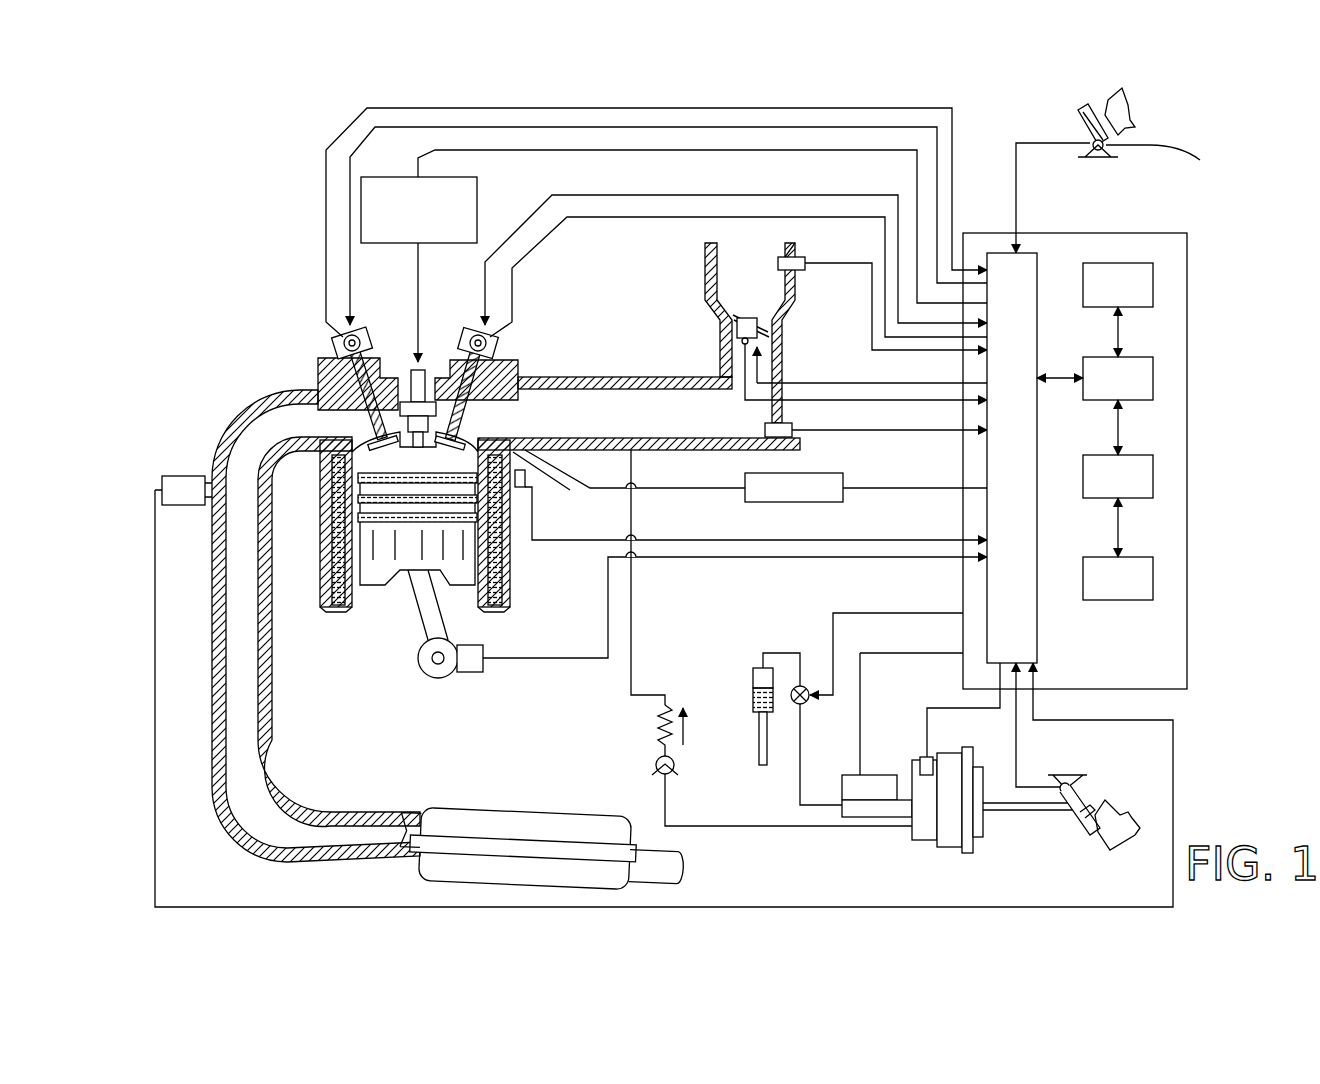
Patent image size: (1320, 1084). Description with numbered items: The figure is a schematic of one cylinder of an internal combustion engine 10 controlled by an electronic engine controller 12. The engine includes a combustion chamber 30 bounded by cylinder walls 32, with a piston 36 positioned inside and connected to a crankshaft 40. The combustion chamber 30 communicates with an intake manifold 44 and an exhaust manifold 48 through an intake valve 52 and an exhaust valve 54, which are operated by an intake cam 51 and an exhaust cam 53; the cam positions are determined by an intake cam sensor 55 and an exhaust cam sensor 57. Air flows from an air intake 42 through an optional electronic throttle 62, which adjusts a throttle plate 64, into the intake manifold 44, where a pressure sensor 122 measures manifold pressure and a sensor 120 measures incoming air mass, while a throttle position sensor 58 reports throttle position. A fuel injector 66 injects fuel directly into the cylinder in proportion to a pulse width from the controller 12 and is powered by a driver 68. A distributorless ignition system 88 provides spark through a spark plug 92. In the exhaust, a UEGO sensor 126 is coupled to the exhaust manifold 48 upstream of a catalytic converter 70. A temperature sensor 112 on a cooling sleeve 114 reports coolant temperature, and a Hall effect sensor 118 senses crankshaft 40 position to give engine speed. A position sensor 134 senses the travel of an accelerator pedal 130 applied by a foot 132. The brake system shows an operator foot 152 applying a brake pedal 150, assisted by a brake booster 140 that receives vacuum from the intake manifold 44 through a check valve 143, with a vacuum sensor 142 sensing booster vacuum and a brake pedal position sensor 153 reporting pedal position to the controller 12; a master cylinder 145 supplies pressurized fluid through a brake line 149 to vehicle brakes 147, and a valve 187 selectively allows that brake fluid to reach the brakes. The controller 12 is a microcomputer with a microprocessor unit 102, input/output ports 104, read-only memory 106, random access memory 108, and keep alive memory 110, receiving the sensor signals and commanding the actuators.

The internal combustion engine 10 is at (250, 312).
The electronic engine controller 12 is at (1185, 233).
The combustion chamber 30 is at (415, 470).
The cylinder walls 32 is at (352, 610).
The piston 36 is at (405, 585).
The crankshaft 40 is at (422, 675).
The air intake 42 is at (760, 289).
The intake manifold 44 is at (700, 424).
The exhaust manifold 48 is at (300, 431).
The intake cam 51 is at (470, 328).
The intake valve 52 is at (465, 395).
The exhaust cam 53 is at (360, 328).
The exhaust valve 54 is at (355, 400).
The intake cam sensor 55 is at (492, 340).
The exhaust cam sensor 57 is at (336, 345).
The throttle position sensor 58 is at (740, 345).
The electronic throttle 62 is at (768, 325).
The throttle plate 64 is at (735, 325).
The fuel injector 66 is at (629, 479).
The driver 68 is at (765, 502).
The catalytic converter 70 is at (432, 812).
The distributorless ignition system 88 is at (374, 177).
The spark plug 92 is at (420, 368).
The microprocessor unit 102 is at (1160, 370).
The input/output ports 104 is at (1037, 265).
The read-only memory 106 is at (1160, 280).
The random access memory 108 is at (1160, 475).
The keep alive memory 110 is at (1160, 575).
The temperature sensor 112 is at (532, 492).
The cooling sleeve 114 is at (515, 570).
The Hall effect sensor 118 is at (467, 672).
The air mass sensor 120 is at (800, 257).
The pressure sensor 122 is at (785, 437).
The Universal Exhaust Gas Oxygen sensor 126 is at (162, 478).
The accelerator pedal 130 is at (1078, 118).
The foot 132 is at (1135, 112).
The position sensor 134 is at (1177, 161).
The brake booster 140 is at (950, 753).
The vacuum sensor 142 is at (920, 760).
The check valve 143 is at (660, 760).
The master cylinder 145 is at (850, 775).
The vehicle brakes 147 is at (758, 668).
The brake line 149 is at (800, 653).
The brake pedal 150 is at (1090, 835).
The operator foot 152 is at (1125, 805).
The brake pedal position sensor 153 is at (1058, 786).
The valve 187 is at (806, 702).